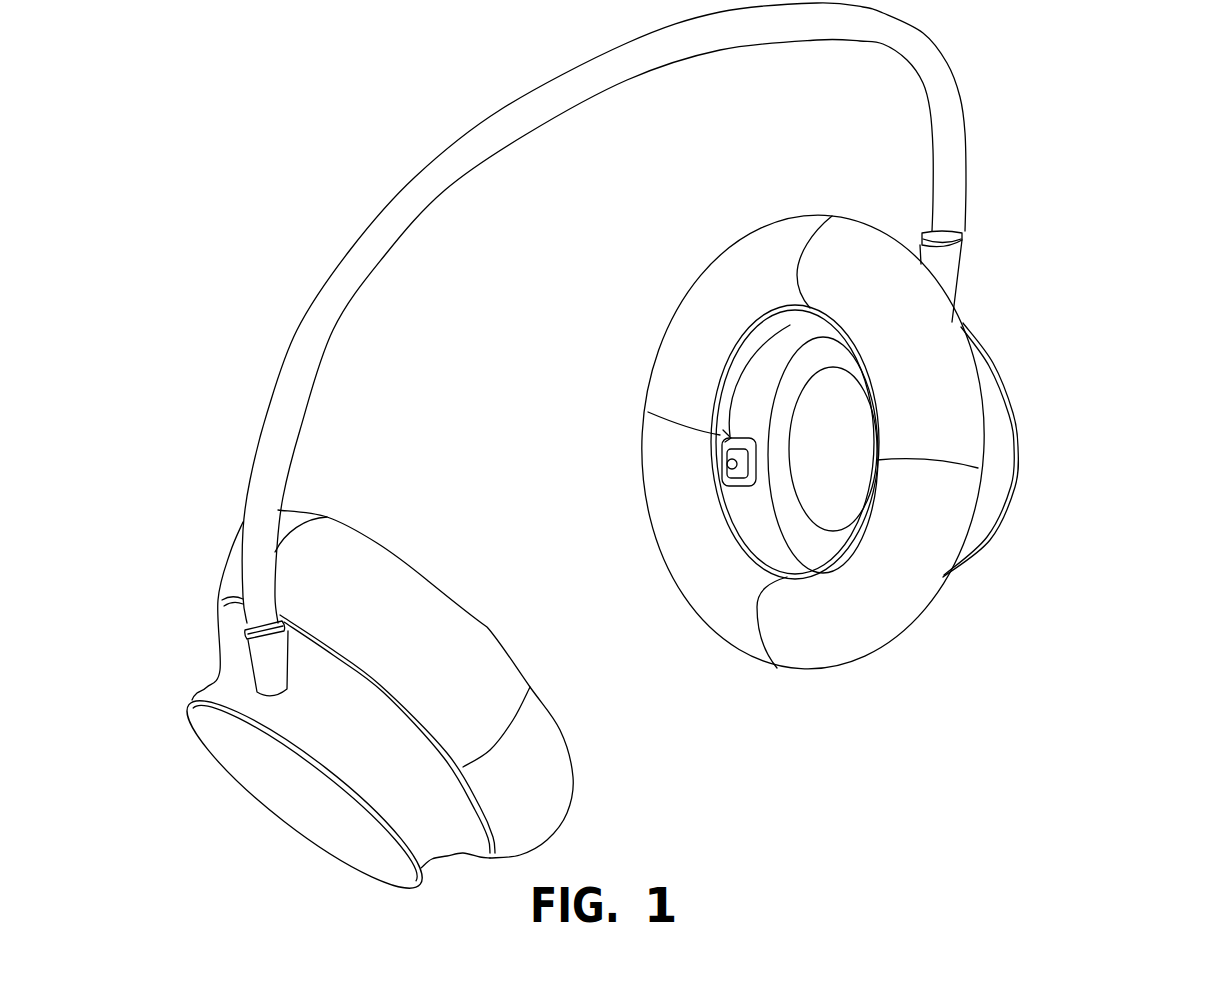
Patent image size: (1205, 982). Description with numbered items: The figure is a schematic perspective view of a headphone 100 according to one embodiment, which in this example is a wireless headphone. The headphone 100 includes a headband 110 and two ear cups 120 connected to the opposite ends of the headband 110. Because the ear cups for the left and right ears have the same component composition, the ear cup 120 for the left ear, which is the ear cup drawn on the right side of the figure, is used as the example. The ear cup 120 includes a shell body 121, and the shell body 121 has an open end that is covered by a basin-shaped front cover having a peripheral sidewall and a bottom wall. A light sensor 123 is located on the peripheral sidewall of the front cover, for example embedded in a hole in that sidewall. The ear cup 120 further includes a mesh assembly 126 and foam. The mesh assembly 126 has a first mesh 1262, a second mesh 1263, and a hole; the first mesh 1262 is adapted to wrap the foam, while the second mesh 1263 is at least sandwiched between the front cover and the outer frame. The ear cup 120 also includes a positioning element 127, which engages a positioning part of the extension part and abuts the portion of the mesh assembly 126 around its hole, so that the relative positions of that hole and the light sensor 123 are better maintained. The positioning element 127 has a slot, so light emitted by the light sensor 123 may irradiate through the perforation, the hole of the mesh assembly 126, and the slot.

The headphone 100 is at (1005, 857).
The headband 110 is at (430, 185).
The ear cup 120 is at (587, 558).
The shell body 121 is at (987, 495).
The light sensor 123 is at (729, 464).
The mesh assembly 126 is at (742, 441).
The first mesh 1262 is at (680, 542).
The second mesh 1263 is at (750, 507).
The positioning element 127 is at (728, 432).